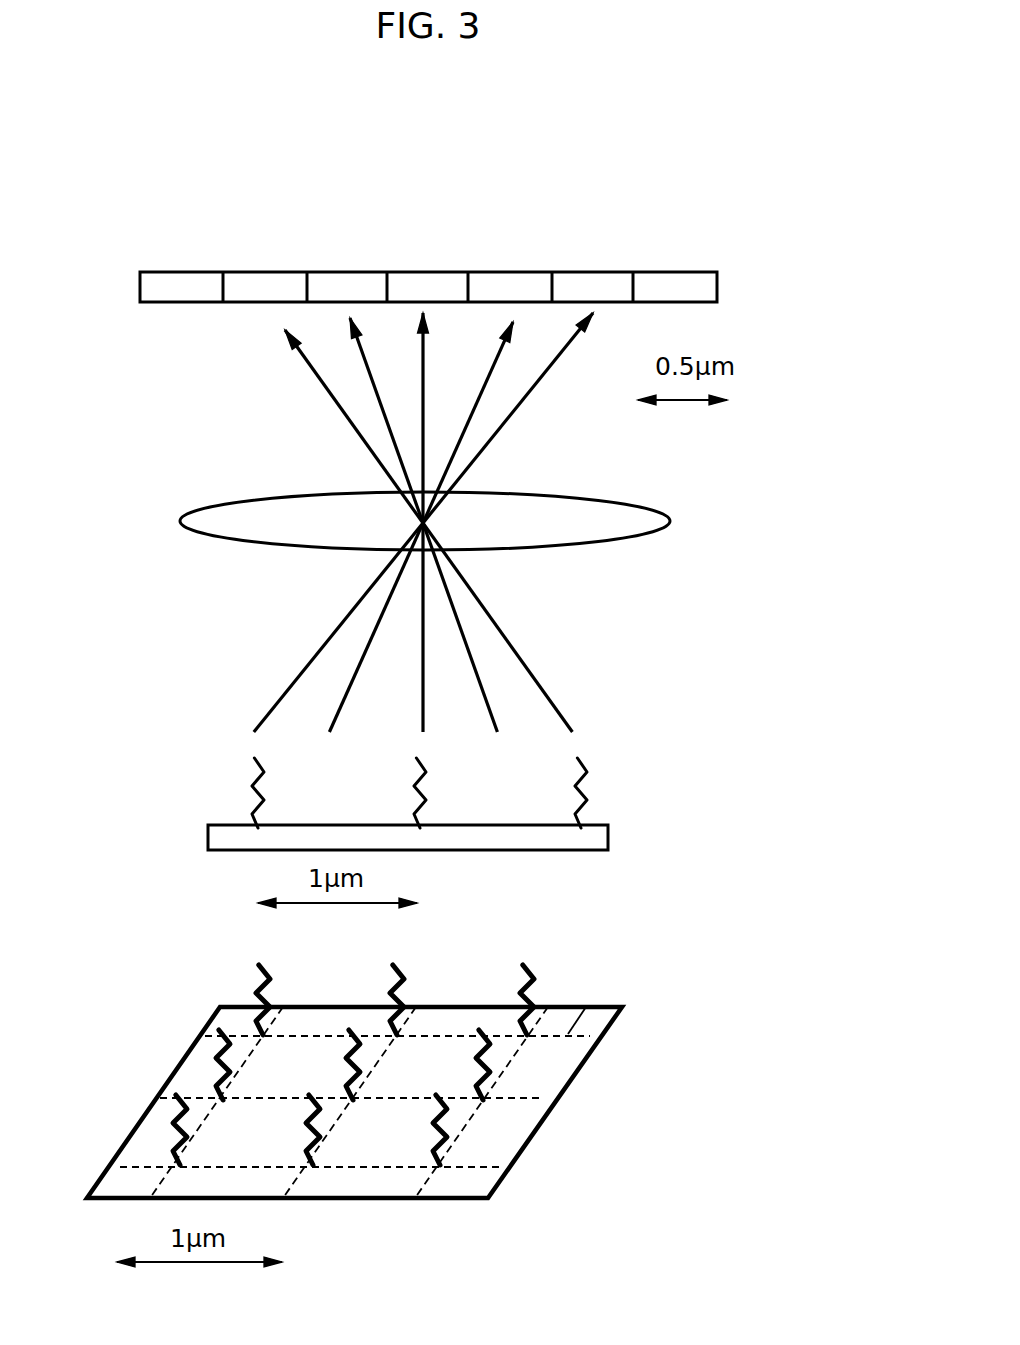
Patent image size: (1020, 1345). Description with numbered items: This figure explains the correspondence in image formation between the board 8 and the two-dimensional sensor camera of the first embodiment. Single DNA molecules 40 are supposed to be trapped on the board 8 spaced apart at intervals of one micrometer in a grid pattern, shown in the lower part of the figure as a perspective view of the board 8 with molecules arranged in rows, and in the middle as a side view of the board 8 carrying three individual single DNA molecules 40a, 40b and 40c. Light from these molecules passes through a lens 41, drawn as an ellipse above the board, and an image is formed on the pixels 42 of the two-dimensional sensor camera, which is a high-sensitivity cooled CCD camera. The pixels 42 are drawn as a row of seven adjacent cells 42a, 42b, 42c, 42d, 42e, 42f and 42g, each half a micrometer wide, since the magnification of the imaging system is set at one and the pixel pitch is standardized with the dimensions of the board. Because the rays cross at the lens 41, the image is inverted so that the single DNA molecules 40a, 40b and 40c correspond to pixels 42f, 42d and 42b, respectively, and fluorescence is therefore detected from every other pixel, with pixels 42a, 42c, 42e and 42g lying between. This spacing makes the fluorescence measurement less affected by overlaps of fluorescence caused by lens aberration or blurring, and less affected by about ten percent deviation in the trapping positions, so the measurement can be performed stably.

The board 8 is at (563, 840).
The single DNA molecules 40 is at (210, 1060).
The single DNA molecule 40a is at (253, 790).
The single DNA molecule 40b is at (418, 783).
The single DNA molecule 40c is at (583, 770).
The lens 41 is at (255, 520).
The pixels 42 is at (747, 248).
The pixel 42a is at (168, 282).
The pixel 42b is at (250, 282).
The pixel 42c is at (343, 282).
The pixel 42d is at (418, 282).
The pixel 42e is at (510, 282).
The pixel 42f is at (588, 282).
The pixel 42g is at (668, 282).